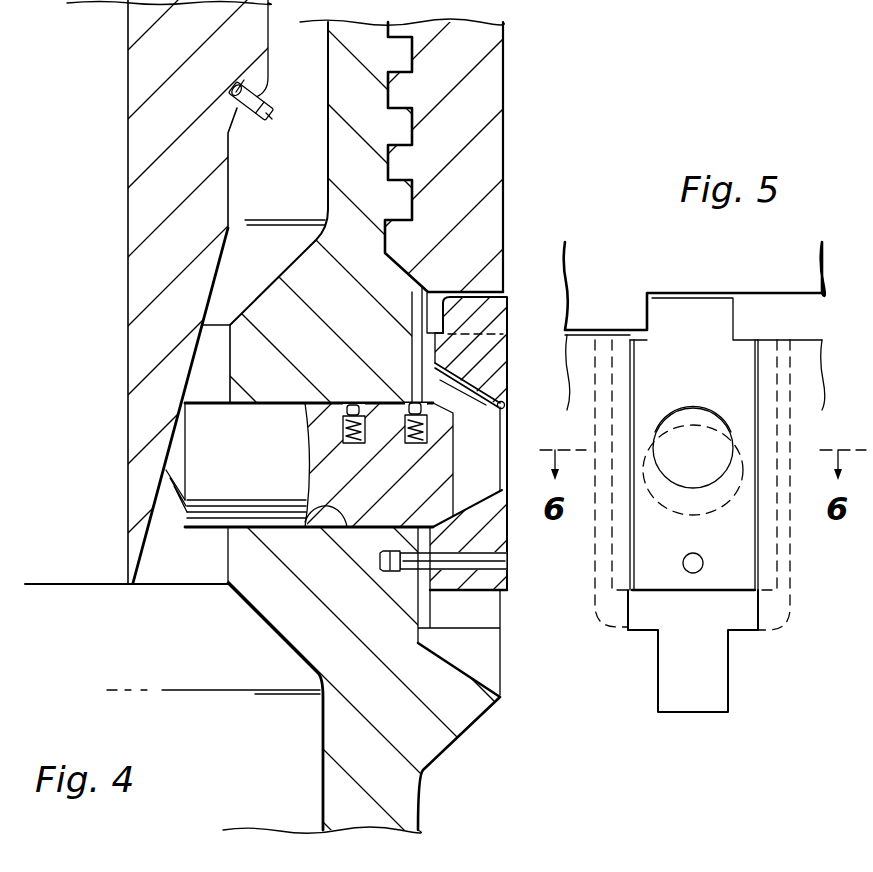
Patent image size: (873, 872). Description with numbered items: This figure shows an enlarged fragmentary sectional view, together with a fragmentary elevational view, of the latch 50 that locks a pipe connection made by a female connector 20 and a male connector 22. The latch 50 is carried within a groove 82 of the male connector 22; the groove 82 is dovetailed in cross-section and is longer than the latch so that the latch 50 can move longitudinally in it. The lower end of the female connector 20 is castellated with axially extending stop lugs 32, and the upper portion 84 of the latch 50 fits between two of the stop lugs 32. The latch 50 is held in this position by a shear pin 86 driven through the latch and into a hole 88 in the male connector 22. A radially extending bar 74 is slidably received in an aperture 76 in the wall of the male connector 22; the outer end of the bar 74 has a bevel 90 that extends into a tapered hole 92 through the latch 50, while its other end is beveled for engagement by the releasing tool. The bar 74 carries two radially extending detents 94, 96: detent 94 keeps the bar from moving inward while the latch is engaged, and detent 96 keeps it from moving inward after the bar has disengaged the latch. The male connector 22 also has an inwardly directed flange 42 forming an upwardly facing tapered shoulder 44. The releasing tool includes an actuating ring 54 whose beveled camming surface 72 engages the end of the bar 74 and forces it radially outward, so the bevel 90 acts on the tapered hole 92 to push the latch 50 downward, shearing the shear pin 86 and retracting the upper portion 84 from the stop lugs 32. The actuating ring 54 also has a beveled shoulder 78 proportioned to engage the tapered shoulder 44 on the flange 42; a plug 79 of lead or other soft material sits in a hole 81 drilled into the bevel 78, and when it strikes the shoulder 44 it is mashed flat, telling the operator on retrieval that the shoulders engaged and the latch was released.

In FIG. 4, the female connector 20 is at (510, 85).
In FIG. 4, the male connector 22 is at (427, 803).
In FIG. 4, the stop lugs 32 is at (430, 312).
In FIG. 5, the stop lugs 32 is at (607, 317).
In FIG. 4, the inwardly directed flange 42 is at (253, 337).
In FIG. 4, the tapered shoulder 44 is at (268, 288).
In FIG. 4, the latch 50 is at (514, 344).
In FIG. 5, the latch 50 is at (714, 368).
In FIG. 4, the actuating ring 54 is at (128, 131).
In FIG. 4, the beveled camming surface 72 is at (148, 555).
In FIG. 4, the radially extending bar 74 is at (259, 451).
In FIG. 4, the aperture 76 is at (347, 491).
In FIG. 4, the beveled shoulder 78 is at (262, 85).
In FIG. 4, the plug 79 is at (263, 118).
In FIG. 4, the hole 81 is at (247, 77).
In FIG. 4, the groove 82 is at (420, 603).
In FIG. 5, the groove 82 is at (757, 610).
In FIG. 5, the upper portion 84 is at (683, 308).
In FIG. 4, the shear pin 86 is at (508, 560).
In FIG. 5, the shear pin 86 is at (683, 563).
In FIG. 4, the hole 88 is at (406, 556).
In FIG. 4, the bevel 90 is at (450, 411).
In FIG. 4, the tapered hole 92 is at (508, 409).
In FIG. 4, the detent 94 is at (413, 402).
In FIG. 4, the detent 96 is at (352, 404).